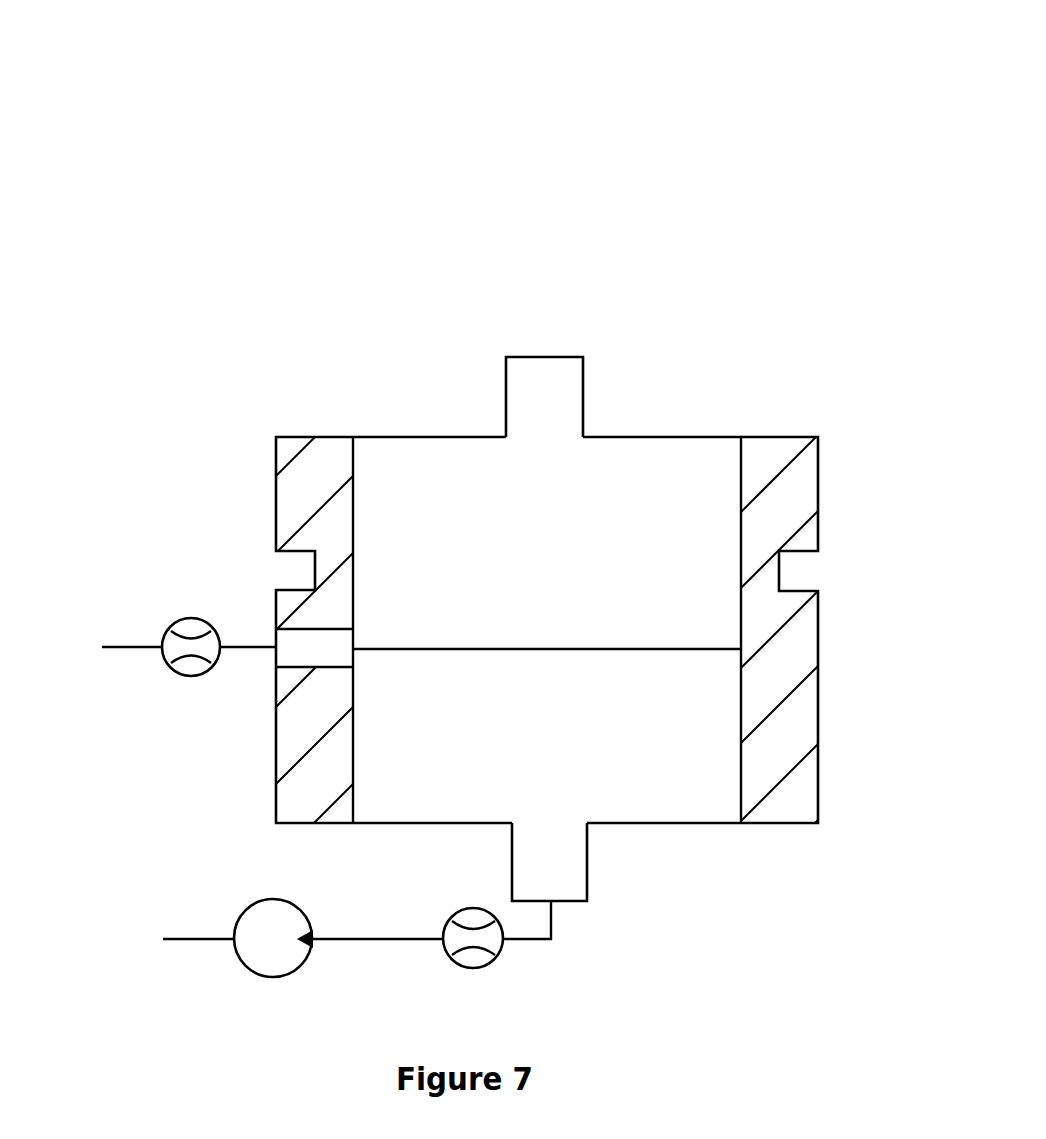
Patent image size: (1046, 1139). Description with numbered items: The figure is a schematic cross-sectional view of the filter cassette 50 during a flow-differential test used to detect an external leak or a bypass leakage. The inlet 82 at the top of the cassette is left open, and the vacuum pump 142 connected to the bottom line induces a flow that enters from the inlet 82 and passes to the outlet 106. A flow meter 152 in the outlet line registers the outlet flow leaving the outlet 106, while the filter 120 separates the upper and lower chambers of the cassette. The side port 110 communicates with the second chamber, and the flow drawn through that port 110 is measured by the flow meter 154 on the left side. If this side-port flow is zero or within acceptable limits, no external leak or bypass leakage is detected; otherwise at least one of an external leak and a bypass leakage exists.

The filtration test assembly 50 is at (703, 236).
The inlet 82 is at (558, 420).
The outlet 106 is at (565, 839).
The filter membrane 120 is at (572, 647).
The port 110 is at (345, 648).
The flow meter 154 is at (178, 618).
The vacuum pump 142 is at (235, 922).
The flow meter F2 152 is at (500, 953).